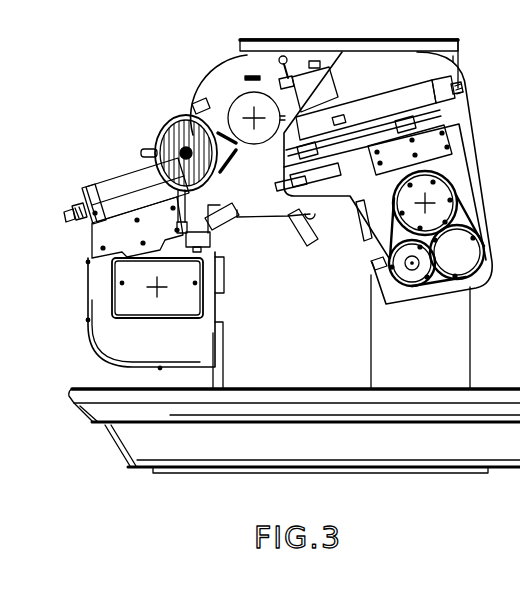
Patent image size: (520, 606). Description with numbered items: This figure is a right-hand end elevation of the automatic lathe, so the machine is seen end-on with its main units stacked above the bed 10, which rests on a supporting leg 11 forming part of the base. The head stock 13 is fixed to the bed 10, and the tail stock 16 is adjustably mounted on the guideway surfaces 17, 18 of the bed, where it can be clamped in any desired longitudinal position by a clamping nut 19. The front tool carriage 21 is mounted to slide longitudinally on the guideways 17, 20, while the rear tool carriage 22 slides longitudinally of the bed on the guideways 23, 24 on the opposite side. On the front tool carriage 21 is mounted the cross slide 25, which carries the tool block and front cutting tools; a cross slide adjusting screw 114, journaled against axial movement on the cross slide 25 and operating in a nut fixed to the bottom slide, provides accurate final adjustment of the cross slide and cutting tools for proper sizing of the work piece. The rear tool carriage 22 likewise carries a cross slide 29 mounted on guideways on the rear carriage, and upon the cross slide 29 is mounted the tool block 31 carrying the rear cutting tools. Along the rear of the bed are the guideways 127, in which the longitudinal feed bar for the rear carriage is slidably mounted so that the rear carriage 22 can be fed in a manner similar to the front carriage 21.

The bed 10 is at (376, 331).
The supporting leg 11 is at (333, 470).
The head stock 13 is at (376, 58).
The tail stock 16 is at (233, 92).
The guideway surface 17 is at (232, 203).
The guideway surface 18 is at (312, 218).
The clamping nut 19 is at (188, 108).
The guideway 20 is at (215, 323).
The front tool carriage 21 is at (97, 294).
The rear tool carriage 22 is at (460, 177).
The guideway 23 is at (278, 183).
The guideway 24 is at (373, 265).
The cross slide 25 is at (122, 178).
The cross slide 29 is at (380, 98).
The tool block 31 is at (332, 72).
The cross slide adjusting screw 114 is at (70, 214).
The guideways 127 is at (367, 233).